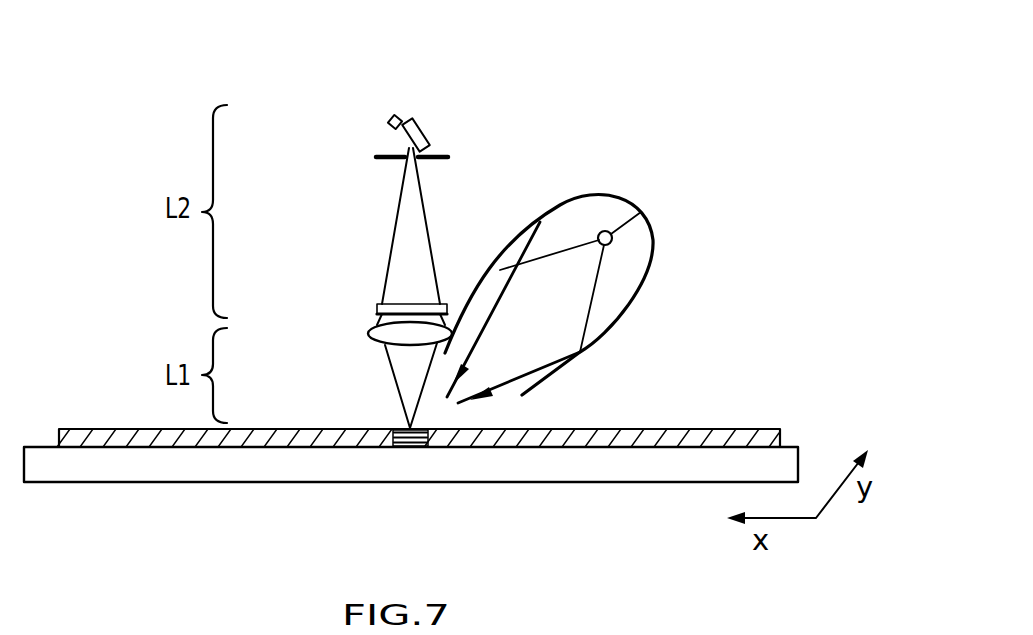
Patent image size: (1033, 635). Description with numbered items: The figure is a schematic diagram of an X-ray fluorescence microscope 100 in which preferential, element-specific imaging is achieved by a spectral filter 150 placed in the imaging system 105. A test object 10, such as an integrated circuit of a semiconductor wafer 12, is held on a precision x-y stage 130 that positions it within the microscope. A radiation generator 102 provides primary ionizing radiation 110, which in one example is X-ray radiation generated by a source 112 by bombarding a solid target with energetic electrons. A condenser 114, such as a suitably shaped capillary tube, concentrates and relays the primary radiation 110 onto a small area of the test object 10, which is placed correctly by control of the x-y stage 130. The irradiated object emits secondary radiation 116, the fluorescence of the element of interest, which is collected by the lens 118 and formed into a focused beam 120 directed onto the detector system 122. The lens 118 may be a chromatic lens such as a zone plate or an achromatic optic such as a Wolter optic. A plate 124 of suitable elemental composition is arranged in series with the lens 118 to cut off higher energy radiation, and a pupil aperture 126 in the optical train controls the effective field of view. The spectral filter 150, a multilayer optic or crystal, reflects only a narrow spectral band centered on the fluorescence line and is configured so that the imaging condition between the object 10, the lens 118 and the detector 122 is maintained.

The test object 10 is at (425, 448).
The semiconductor wafer 12 is at (368, 448).
The X-ray fluorescence microscope 100 is at (543, 145).
The radiation generator 102 is at (602, 192).
The imaging system 105 is at (350, 257).
The primary ionizing radiation 110 is at (487, 300).
The source 112 is at (643, 207).
The condenser 114 is at (651, 262).
The secondary radiation 116 is at (397, 388).
The lens 118 is at (445, 355).
The focused beam 120 is at (386, 289).
The detector system 122 is at (389, 126).
The plate 124 is at (380, 311).
The aperture 126 is at (378, 157).
The x-y stage 130 is at (798, 462).
The spectral filter 150 is at (422, 122).